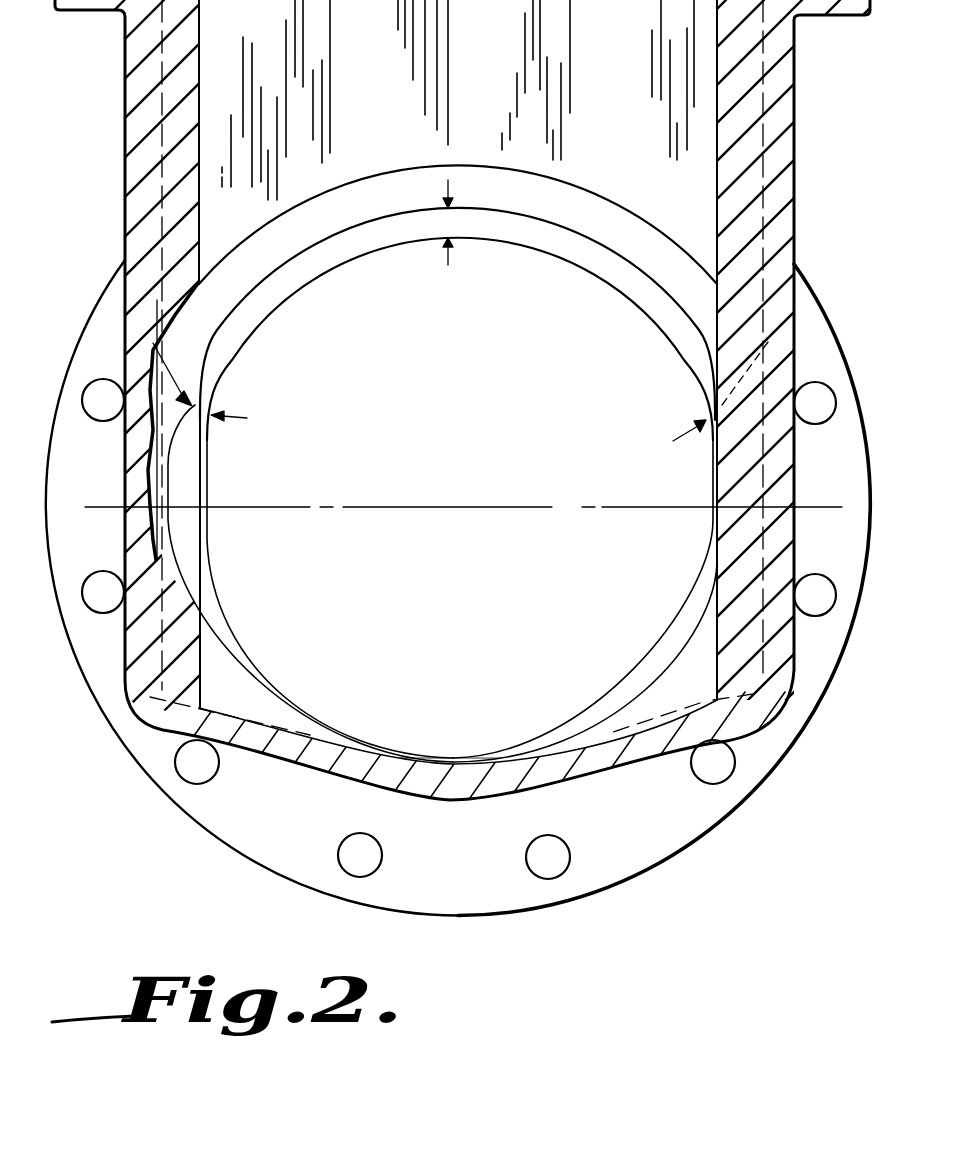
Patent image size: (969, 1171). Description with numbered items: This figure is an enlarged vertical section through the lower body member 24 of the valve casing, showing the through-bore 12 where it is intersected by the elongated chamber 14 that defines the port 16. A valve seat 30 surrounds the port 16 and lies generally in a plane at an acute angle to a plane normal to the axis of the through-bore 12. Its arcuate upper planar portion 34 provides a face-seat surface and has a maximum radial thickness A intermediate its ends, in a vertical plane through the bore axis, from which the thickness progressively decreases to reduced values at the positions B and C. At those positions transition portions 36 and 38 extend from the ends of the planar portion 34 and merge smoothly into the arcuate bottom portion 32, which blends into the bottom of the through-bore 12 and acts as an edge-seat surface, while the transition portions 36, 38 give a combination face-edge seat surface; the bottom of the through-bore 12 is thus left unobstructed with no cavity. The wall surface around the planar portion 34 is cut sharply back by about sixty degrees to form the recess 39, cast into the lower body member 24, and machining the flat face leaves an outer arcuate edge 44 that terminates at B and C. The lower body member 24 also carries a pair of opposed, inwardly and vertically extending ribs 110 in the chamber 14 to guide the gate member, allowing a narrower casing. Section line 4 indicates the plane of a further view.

The section line 4- 4 is at (105, 460).
The through-bore 12 is at (495, 453).
The elongated chamber 14 is at (636, 155).
The port 16 is at (630, 311).
The lower body member 24 is at (796, 174).
The valve seat 30 is at (341, 250).
The arcuate bottom portion 32 is at (450, 750).
The arcuate upper planar portion 34 is at (496, 226).
The transition portion 36 is at (186, 537).
The transition portion 38 is at (716, 532).
The recess 39 is at (386, 198).
The outer arcuate edge 44 is at (540, 213).
The ribs 110 is at (200, 239).
The maximum radial thickness A is at (446, 222).
The position of reduced radial thickness B is at (205, 402).
The position of reduced radial thickness C is at (710, 407).